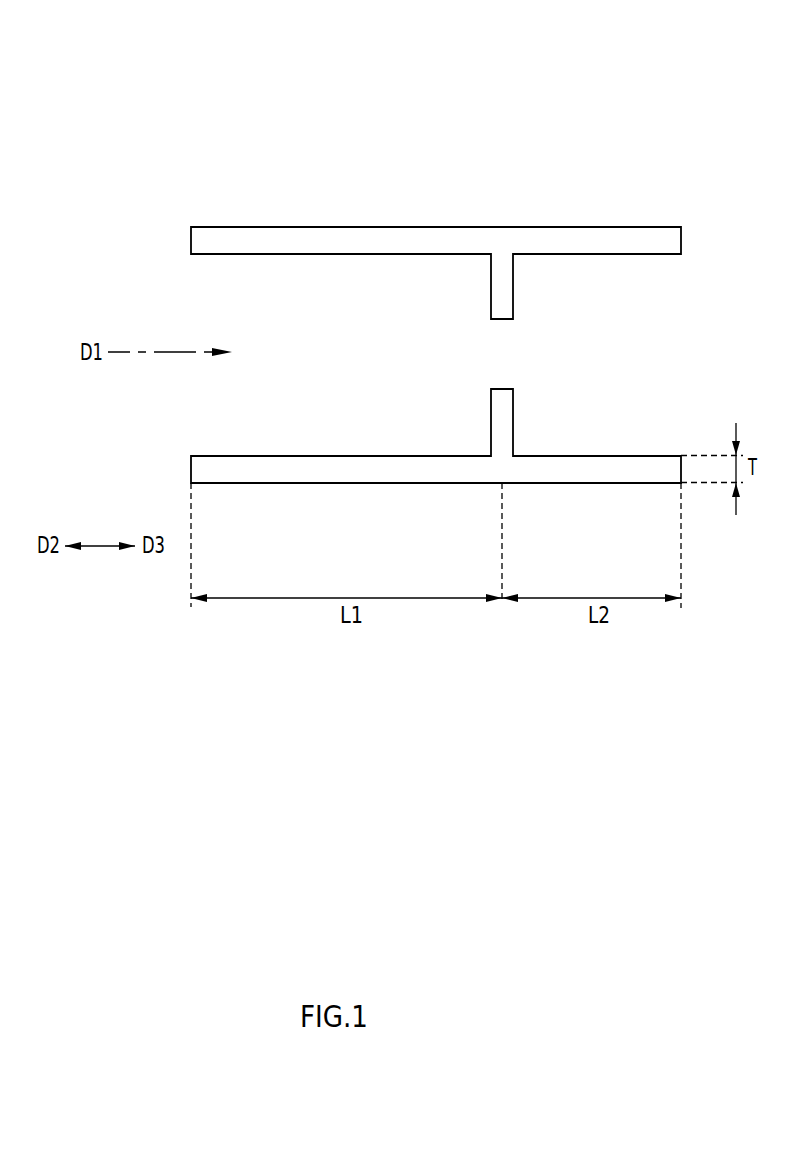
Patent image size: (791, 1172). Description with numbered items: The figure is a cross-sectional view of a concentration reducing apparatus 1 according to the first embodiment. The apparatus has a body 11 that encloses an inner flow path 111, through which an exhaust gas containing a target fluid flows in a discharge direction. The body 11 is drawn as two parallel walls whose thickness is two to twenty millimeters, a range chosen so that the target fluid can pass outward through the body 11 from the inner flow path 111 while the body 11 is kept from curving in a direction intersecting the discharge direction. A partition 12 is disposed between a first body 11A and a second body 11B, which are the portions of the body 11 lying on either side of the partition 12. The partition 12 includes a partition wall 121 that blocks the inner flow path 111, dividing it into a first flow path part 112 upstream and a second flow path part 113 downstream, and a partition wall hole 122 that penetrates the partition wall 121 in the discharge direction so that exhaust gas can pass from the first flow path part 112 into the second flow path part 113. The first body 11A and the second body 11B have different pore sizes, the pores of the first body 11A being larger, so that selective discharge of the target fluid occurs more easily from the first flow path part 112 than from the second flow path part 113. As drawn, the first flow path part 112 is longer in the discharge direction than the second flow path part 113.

The device 1 is at (154, 34).
The body 11 is at (512, 62).
The first body 11A is at (333, 238).
The second body 11B is at (578, 240).
The partition 12 is at (412, 128).
The partition wall 121 is at (503, 290).
The partition wall hole 122 is at (489, 348).
The inner flow path 111 is at (460, 527).
The first flow path part 112 is at (395, 373).
The second flow path part 113 is at (598, 341).